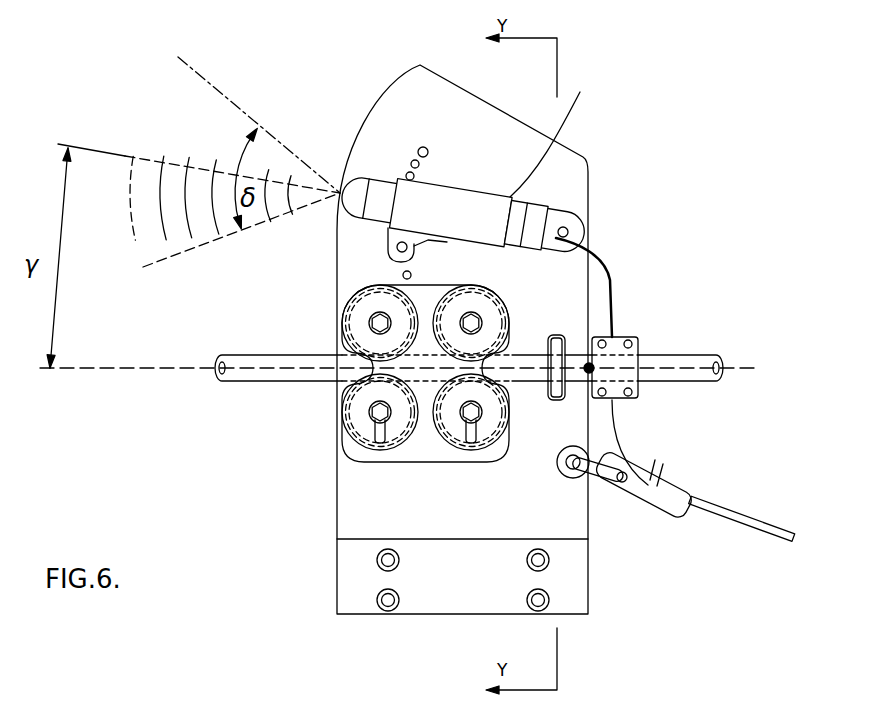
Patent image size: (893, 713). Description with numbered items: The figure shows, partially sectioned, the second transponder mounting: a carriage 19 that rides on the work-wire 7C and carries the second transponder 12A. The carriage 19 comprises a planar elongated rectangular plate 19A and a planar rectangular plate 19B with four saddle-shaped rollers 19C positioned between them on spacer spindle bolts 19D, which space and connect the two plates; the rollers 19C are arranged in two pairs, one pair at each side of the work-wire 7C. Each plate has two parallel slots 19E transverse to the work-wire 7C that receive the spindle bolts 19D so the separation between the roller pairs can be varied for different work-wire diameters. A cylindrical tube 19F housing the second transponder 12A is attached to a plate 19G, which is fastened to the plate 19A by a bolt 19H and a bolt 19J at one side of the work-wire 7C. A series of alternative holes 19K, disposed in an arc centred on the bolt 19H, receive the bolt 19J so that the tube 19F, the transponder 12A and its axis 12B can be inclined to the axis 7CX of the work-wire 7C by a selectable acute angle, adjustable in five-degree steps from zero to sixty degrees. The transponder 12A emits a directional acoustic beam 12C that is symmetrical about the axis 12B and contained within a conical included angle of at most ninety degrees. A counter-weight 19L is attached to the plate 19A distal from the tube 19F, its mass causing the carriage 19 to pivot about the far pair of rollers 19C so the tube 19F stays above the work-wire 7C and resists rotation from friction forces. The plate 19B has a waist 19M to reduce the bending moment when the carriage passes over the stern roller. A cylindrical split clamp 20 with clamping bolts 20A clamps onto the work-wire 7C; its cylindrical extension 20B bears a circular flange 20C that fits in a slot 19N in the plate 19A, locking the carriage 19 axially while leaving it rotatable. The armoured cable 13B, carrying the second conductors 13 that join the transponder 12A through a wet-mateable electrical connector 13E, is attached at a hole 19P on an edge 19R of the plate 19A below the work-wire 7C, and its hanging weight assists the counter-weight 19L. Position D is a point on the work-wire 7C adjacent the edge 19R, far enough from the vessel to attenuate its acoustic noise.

The second transponder 12A is at (380, 195).
The axis 12B is at (120, 160).
The directional acoustic beam 12C is at (233, 123).
The work-wire 7C is at (227, 357).
The axis of work-wire 7CX is at (133, 370).
The second conductors 13 is at (590, 240).
The armoured cable 13B is at (762, 522).
The wet-mateable electrical connector 13E is at (575, 215).
The carriage 19 is at (700, 118).
The planar elongated rectangular plate 19A is at (548, 170).
The planar rectangular plate 19B is at (358, 452).
The saddle-shaped rollers 19C is at (367, 315).
The spacer spindle bolts 19D is at (372, 328).
The parallel slots 19E is at (378, 442).
The cylindrical tube 19F is at (556, 134).
The plate 19G is at (403, 275).
The bolt 19H is at (572, 228).
The bolt 19J is at (397, 248).
The alternative holes 19K is at (413, 155).
The counter-weight 19L is at (575, 590).
The waist 19M is at (405, 374).
The slot 19N is at (566, 342).
The hole 19P is at (562, 472).
The edge 19R is at (592, 535).
The cylindrical split clamp 20 is at (700, 357).
The clamping bolts 20A is at (632, 346).
The cylindrical extension 20B is at (630, 338).
The circular flange 20C is at (578, 347).
The position D is at (592, 372).